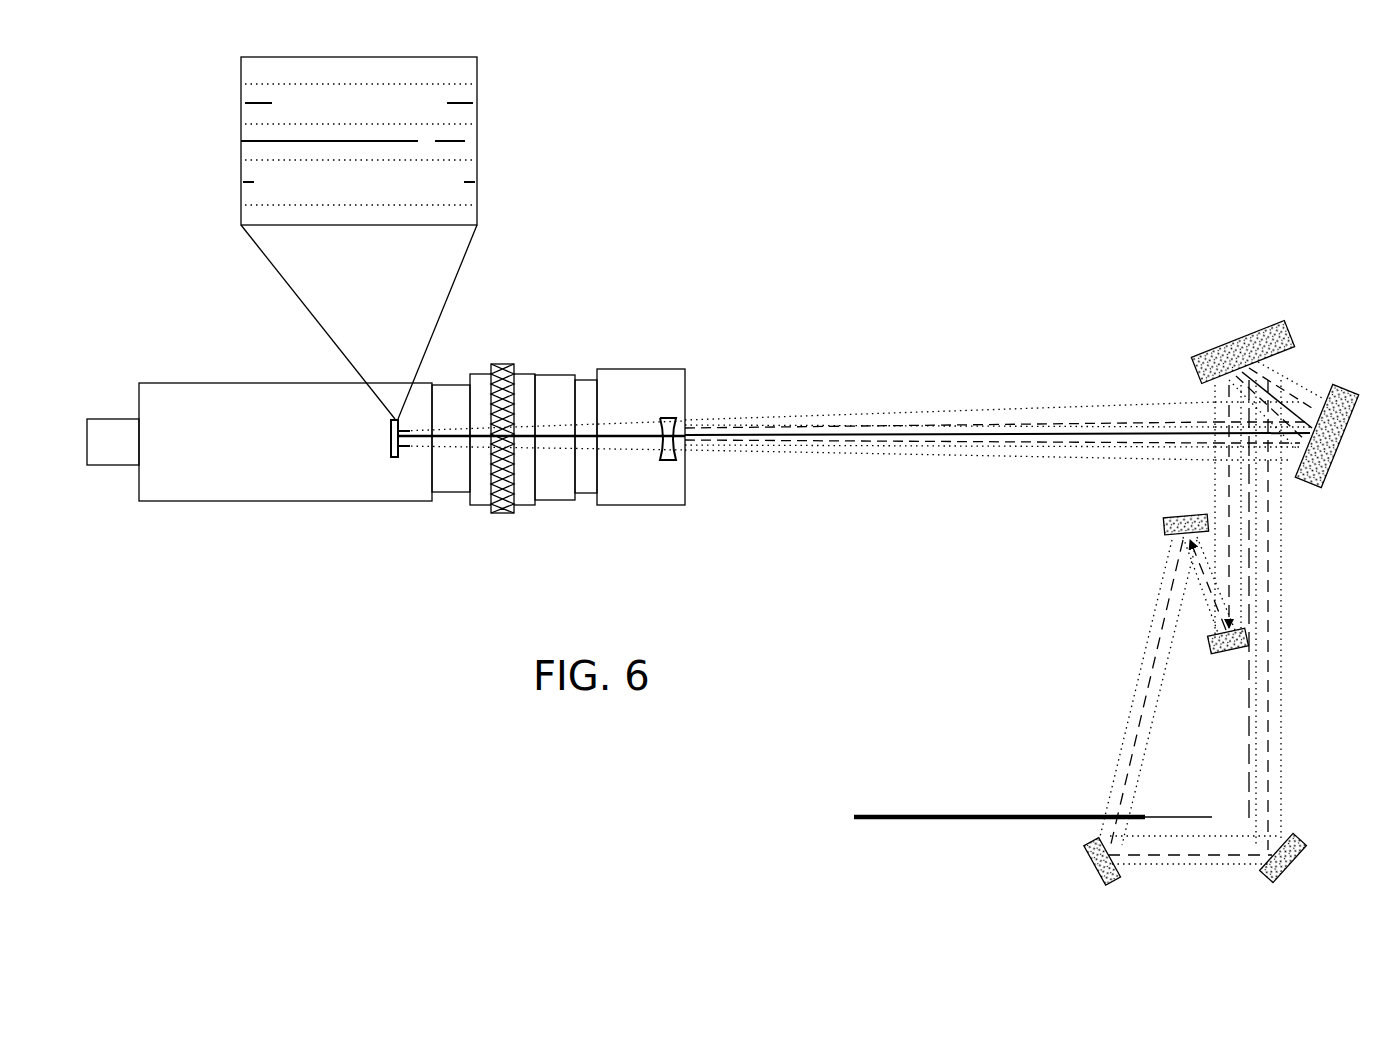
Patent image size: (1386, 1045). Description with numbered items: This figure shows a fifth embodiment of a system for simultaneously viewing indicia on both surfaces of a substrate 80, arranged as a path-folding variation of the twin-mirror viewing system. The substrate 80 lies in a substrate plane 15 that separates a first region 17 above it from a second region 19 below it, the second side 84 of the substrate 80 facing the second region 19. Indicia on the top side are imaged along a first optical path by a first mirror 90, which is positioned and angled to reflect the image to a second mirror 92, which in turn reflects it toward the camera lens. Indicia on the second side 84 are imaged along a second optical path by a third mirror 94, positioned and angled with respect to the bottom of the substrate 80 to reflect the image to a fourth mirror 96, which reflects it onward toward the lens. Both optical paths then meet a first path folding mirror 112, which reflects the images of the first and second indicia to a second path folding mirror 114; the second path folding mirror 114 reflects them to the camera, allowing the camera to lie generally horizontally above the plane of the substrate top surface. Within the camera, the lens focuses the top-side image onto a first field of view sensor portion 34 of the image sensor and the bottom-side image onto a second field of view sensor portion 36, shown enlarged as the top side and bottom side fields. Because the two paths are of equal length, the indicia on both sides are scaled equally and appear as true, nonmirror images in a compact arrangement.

The first field of view sensor portion 34 is at (477, 92).
The second field of view sensor portion 36 is at (477, 190).
The first region 17 is at (990, 507).
The first path folding mirror 112 is at (1232, 346).
The second path folding mirror 114 is at (1345, 450).
The first mirror 90 is at (1163, 524).
The second mirror 92 is at (1210, 648).
The substrate 80 is at (888, 822).
The second side 84 is at (961, 824).
The substrate plane 15 is at (1182, 815).
The third mirror 94 is at (1090, 865).
The fourth mirror 96 is at (1300, 850).
The second region 19 is at (1206, 918).